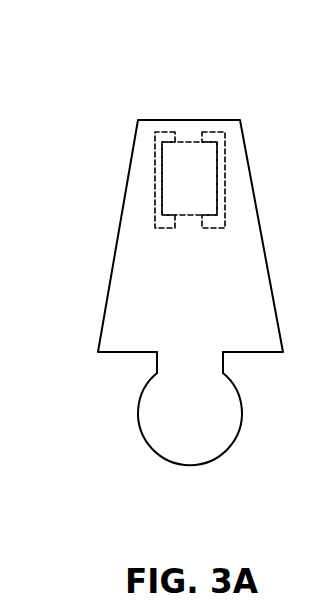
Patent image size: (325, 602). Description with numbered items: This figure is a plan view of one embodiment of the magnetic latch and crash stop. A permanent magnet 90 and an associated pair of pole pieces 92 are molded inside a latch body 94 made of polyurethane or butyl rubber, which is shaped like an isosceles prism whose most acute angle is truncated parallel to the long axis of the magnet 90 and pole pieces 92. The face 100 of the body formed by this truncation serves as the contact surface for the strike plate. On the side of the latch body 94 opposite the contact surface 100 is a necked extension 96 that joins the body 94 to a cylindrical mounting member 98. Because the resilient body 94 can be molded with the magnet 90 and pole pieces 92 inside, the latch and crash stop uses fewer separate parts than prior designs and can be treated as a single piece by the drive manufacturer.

The face 100 is at (150, 262).
The pole pieces 92 is at (227, 127).
The permanent magnet 90 is at (178, 197).
The latch body 94 is at (125, 345).
The necked extension 96 is at (157, 365).
The cylindrical mounting member 98 is at (167, 443).